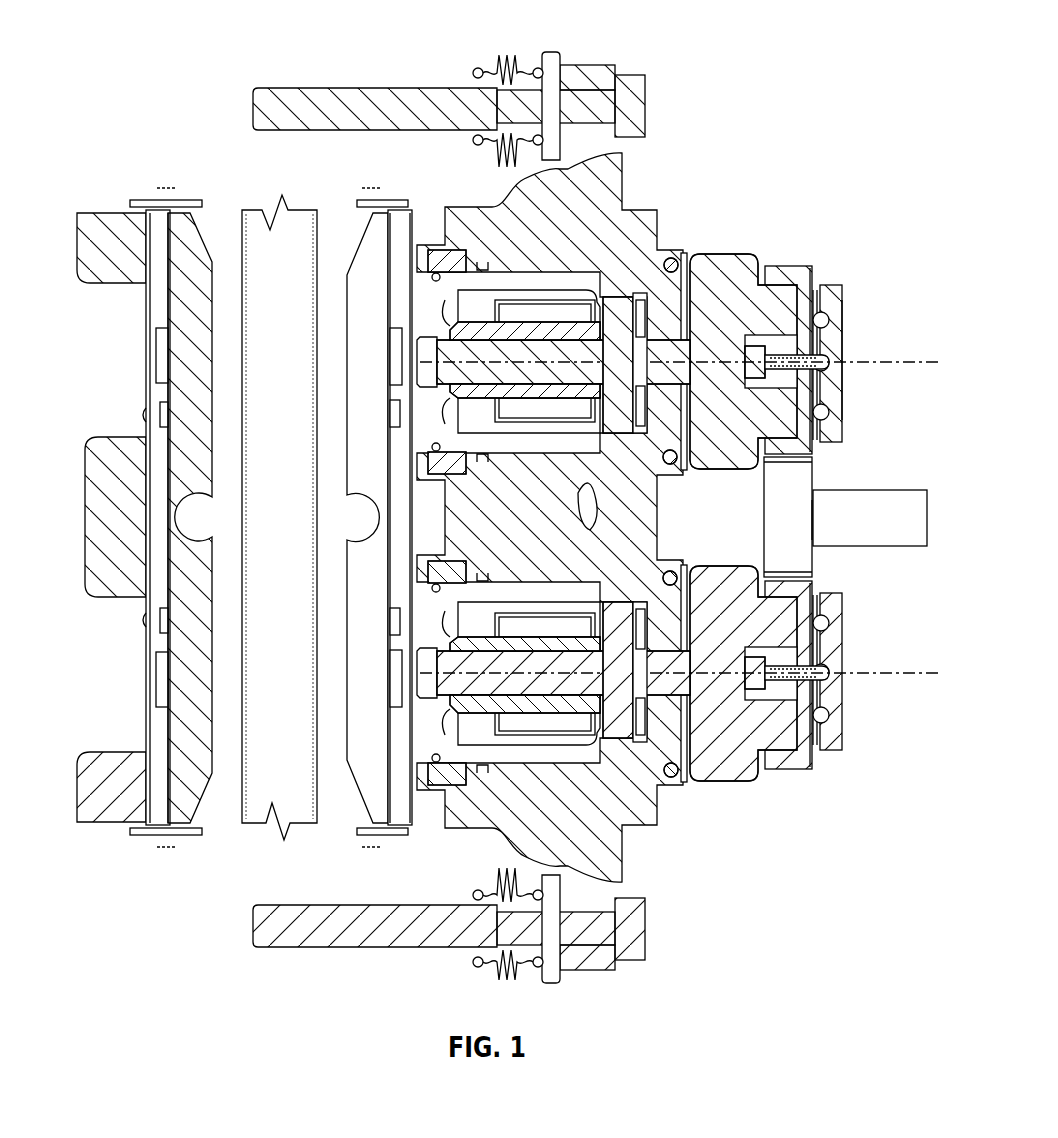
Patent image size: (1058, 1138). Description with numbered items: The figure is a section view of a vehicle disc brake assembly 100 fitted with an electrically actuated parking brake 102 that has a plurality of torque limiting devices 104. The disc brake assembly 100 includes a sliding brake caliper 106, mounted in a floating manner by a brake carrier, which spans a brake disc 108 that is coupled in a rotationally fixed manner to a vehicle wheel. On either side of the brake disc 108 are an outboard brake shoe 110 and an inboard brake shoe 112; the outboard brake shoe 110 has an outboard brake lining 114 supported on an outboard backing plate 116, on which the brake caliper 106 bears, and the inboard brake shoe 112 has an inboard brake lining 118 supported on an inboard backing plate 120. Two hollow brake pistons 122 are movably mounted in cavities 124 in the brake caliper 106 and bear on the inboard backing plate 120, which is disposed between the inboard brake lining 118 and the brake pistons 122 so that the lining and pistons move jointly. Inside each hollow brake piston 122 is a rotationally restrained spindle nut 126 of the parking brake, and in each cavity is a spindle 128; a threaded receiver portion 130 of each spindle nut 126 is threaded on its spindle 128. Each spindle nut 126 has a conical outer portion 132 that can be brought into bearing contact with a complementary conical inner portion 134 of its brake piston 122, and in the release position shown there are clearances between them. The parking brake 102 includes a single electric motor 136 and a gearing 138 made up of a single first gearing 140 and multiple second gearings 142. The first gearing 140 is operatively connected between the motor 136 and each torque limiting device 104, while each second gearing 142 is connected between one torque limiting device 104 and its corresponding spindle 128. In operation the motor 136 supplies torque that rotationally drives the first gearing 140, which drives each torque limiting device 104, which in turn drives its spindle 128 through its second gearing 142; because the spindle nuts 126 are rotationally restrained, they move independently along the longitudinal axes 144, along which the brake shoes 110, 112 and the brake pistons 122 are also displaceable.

The vehicle disc brake assembly 100 is at (158, 42).
The electric parking brake 102 is at (880, 460).
The torque limiting device 104 is at (728, 252).
The sliding brake caliper 106 is at (643, 207).
The brake disc 108 is at (240, 815).
The outboard brake shoe 110 is at (128, 707).
The inboard brake shoe 112 is at (393, 866).
The outboard brake lining 114 is at (178, 810).
The outboard backing plate 116 is at (153, 787).
The inboard brake lining 118 is at (378, 225).
The inboard backing plate 120 is at (400, 220).
The brake piston 122 is at (628, 160).
The cavity 124 is at (688, 300).
The spindle nut 126 is at (483, 323).
The spindle 128 is at (675, 370).
The threaded receiver portion 130 is at (602, 292).
The conical outer portion 132 is at (418, 437).
The conical inner portion 134 is at (418, 308).
The electric motor 136 is at (851, 532).
The gearing 138 is at (822, 562).
The first gearing 140 is at (765, 518).
The second gearing 142 is at (752, 256).
The longitudinal axis 144 is at (874, 360).